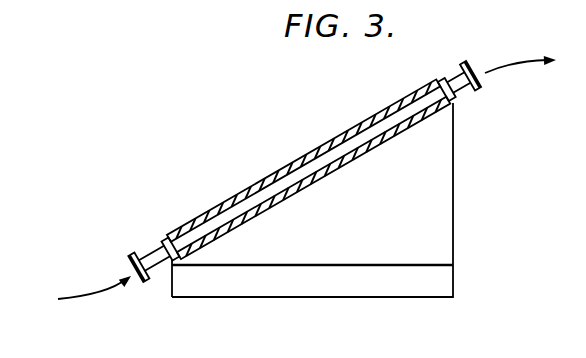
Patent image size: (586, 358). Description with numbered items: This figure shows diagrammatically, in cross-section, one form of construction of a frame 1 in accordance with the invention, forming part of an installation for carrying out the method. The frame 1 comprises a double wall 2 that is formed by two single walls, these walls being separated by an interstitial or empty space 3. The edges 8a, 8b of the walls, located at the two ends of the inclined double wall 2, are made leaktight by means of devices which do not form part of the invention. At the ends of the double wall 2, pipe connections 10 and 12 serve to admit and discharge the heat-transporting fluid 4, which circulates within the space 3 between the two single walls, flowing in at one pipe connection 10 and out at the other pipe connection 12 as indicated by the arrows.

The frame 1 is at (287, 105).
The double wall 2 is at (198, 188).
The interstitial space 3 is at (375, 122).
The heat-transporting fluid 4 is at (250, 195).
The edge of the walls 8a is at (160, 242).
The edge of the walls 8b is at (444, 82).
The pipe connection 10 is at (157, 267).
The pipe connection 12 is at (465, 93).